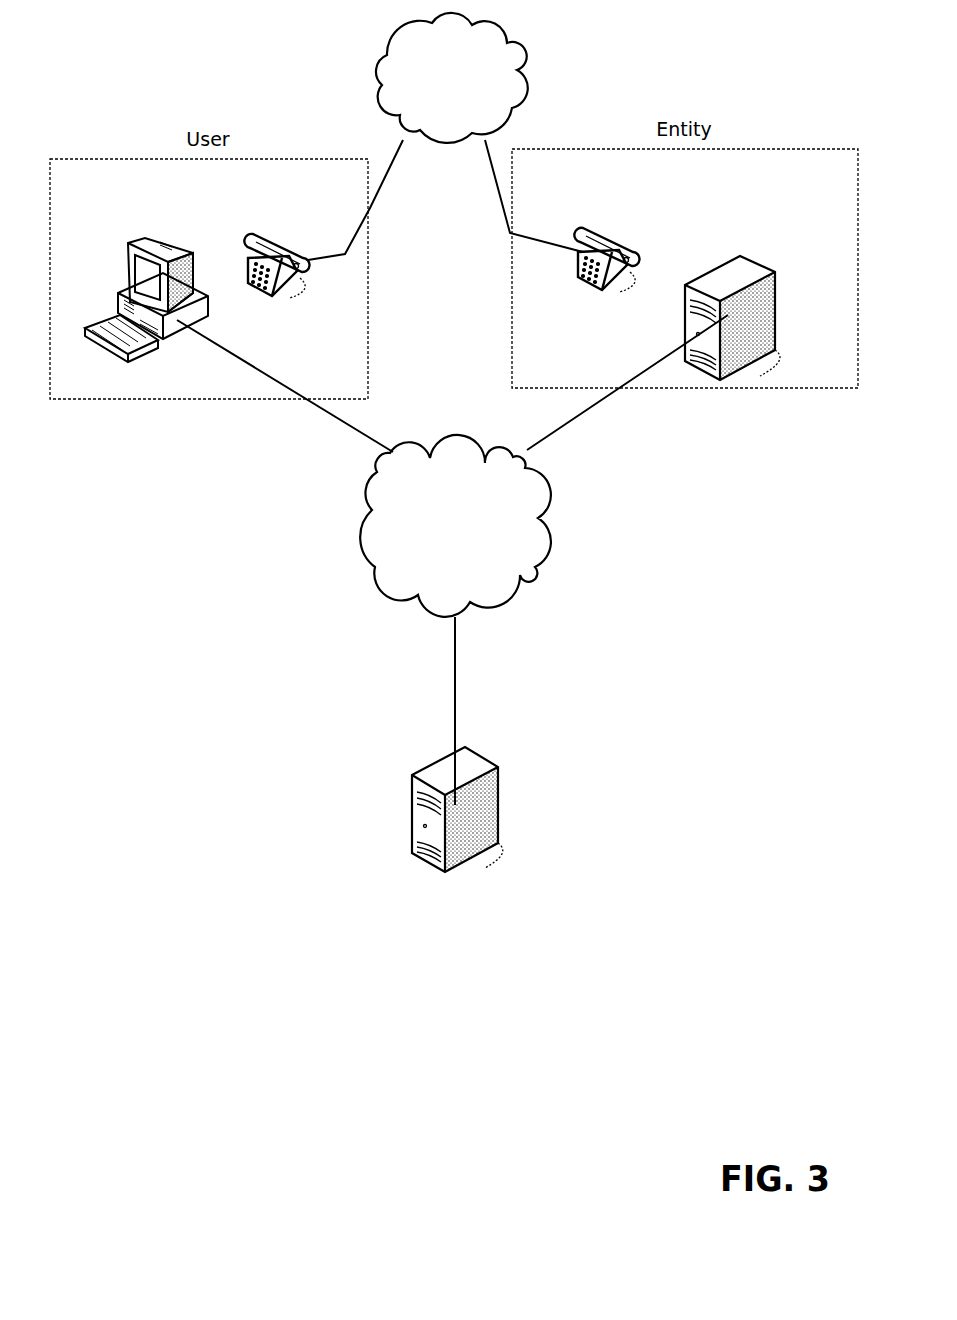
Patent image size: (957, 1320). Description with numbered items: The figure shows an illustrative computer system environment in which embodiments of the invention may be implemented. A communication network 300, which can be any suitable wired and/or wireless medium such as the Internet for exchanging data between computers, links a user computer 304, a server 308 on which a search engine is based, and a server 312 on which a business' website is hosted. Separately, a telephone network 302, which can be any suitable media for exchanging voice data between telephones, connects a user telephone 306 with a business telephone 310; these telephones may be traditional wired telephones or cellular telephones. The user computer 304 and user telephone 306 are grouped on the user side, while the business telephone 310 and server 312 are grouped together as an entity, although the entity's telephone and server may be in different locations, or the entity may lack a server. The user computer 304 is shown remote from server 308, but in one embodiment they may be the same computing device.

The communication network 300 is at (455, 526).
The telephone network 302 is at (452, 78).
The user computer 304 is at (146, 230).
The user telephone 306 is at (276, 233).
The server 308 is at (479, 745).
The business telephone 310 is at (607, 227).
The server 312 is at (721, 256).